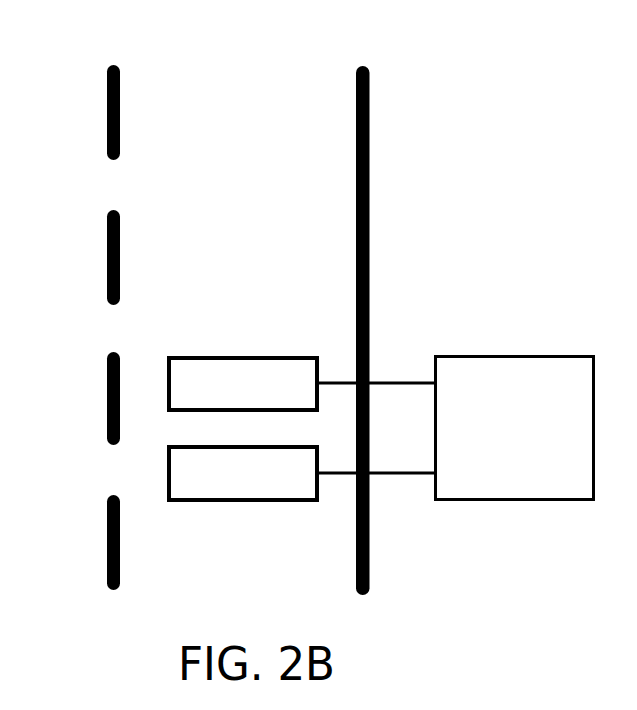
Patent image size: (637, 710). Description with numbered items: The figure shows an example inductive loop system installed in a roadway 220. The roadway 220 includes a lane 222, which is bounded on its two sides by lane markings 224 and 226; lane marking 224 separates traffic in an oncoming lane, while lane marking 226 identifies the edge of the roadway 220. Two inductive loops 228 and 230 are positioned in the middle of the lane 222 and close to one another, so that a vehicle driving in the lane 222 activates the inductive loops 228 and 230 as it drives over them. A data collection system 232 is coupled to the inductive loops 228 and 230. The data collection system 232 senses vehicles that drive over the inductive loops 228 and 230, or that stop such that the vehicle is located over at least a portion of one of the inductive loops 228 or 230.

The roadway 220 is at (523, 178).
The lane 222 is at (230, 98).
The lane marking 224 is at (110, 210).
The lane marking 226 is at (357, 203).
The inductive loop 228 is at (238, 356).
The inductive loop 230 is at (237, 502).
The data collection system 232 is at (515, 428).